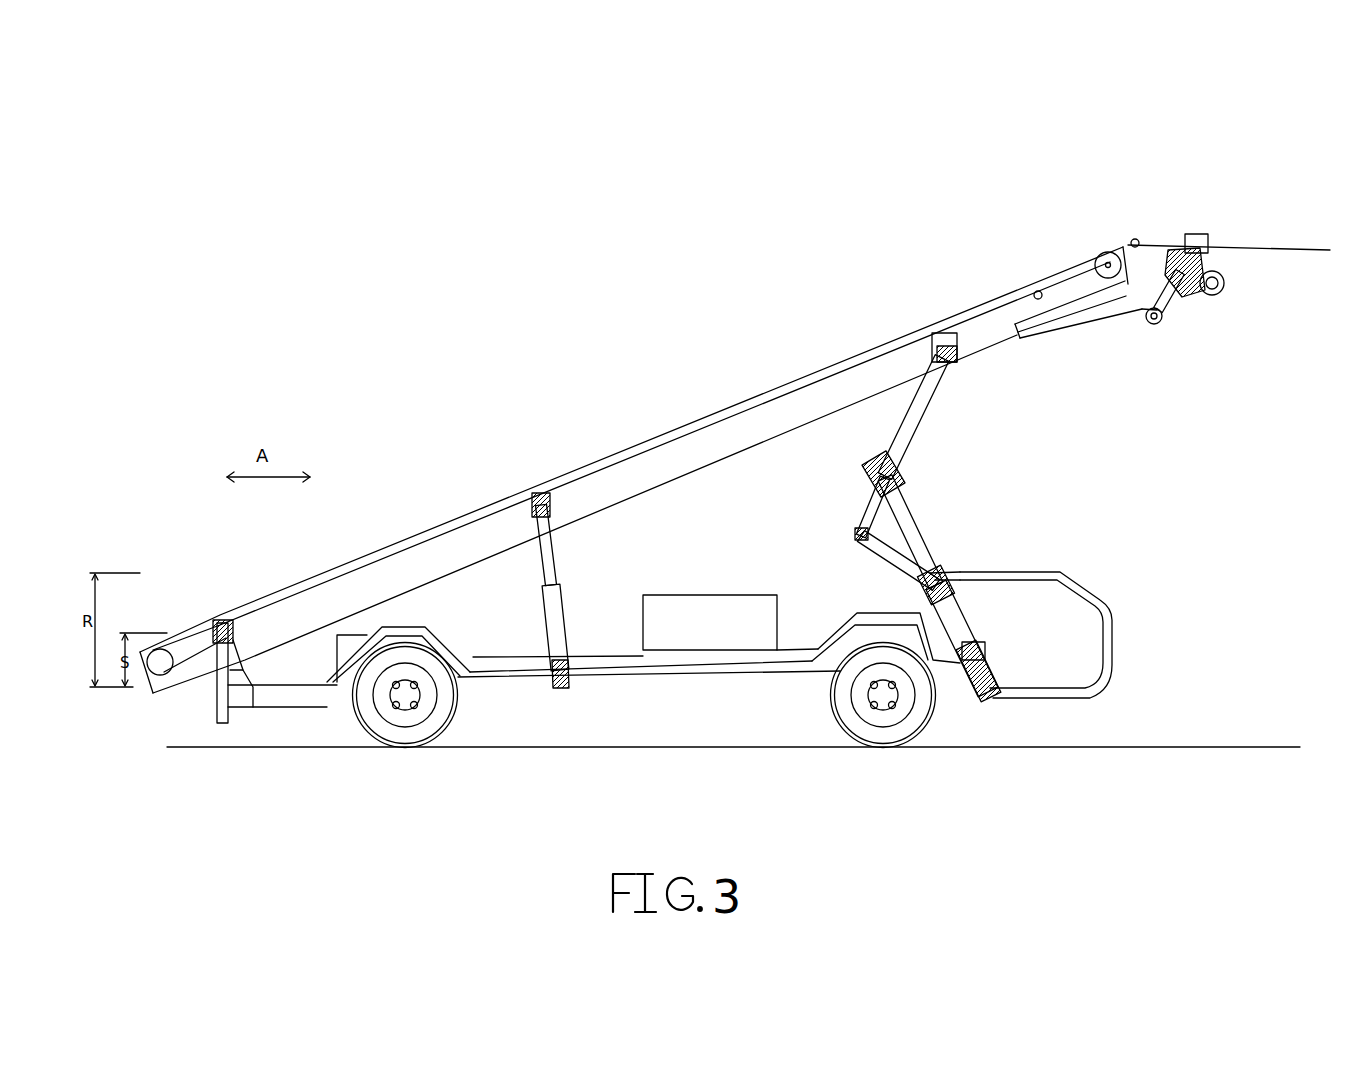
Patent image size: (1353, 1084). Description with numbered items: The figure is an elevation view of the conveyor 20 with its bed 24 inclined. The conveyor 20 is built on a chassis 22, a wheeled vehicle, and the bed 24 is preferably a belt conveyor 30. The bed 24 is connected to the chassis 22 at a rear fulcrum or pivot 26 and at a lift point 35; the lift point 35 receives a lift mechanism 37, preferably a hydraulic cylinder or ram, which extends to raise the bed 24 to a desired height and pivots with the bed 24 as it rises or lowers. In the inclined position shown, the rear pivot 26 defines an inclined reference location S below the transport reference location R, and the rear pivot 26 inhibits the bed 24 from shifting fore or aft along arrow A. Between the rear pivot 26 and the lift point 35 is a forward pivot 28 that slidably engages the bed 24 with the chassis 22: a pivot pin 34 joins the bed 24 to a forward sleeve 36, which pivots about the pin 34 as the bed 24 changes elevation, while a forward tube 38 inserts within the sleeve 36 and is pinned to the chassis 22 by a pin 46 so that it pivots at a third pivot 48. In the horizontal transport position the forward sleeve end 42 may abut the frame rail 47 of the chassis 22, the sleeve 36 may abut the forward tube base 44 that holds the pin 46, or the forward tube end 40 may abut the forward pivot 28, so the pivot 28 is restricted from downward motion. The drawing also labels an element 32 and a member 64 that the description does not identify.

The conveyor 20 is at (380, 267).
The chassis 22 is at (1202, 582).
The bed 24 is at (197, 597).
The rear pivot 26 is at (229, 594).
The forward pivot 28 is at (538, 489).
The belt conveyor 30 is at (880, 334).
The conveyor belt 32 is at (569, 499).
The pivot pin 34 is at (531, 513).
The lift point 35 is at (945, 304).
The forward sleeve 36 is at (558, 563).
The lift mechanism 37 is at (852, 472).
The forward tube 38 is at (564, 641).
The forward tube end 40 is at (543, 574).
The forward sleeve end 42 is at (547, 614).
The forward tube base 44 is at (551, 689).
The forward tube pin 46 is at (565, 690).
The frame rail 47 is at (718, 672).
The third pivot 48 is at (592, 687).
The strut 64 is at (920, 422).